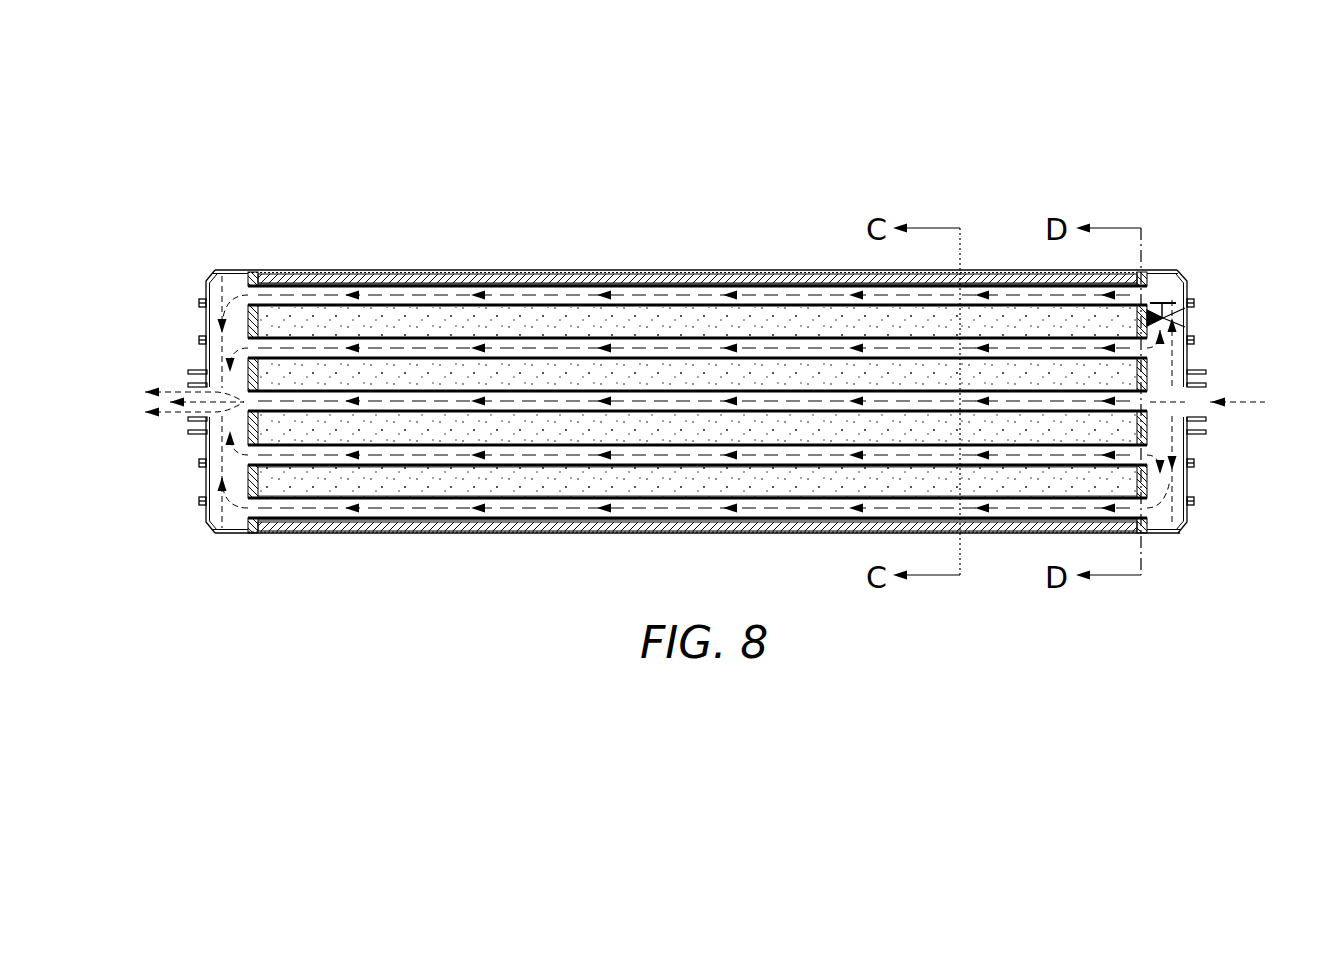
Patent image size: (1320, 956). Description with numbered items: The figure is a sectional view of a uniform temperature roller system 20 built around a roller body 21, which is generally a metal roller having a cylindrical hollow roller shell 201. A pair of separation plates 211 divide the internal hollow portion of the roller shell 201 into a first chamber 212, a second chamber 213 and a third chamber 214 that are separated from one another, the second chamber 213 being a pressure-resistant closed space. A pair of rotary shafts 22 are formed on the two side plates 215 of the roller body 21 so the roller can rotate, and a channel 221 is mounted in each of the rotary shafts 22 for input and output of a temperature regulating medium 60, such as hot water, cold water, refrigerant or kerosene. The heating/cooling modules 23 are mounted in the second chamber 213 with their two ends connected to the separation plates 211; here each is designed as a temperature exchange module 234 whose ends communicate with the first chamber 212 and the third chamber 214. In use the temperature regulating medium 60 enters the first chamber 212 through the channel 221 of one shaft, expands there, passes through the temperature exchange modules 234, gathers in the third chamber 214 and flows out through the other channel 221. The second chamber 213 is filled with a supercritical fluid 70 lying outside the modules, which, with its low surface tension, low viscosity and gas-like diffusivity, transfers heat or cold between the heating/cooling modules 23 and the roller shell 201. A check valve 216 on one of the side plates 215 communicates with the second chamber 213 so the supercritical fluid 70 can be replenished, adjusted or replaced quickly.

The uniform temperature roller system 20 is at (1302, 106).
The roller body 21 is at (1190, 181).
The roller shell 201 is at (470, 534).
The separation plates 211 is at (248, 490).
The first chamber 212 is at (231, 290).
The second chamber 213 is at (568, 318).
The third chamber 214 is at (1164, 286).
The side plates 215 is at (206, 313).
The check valve 216 is at (1188, 296).
The rotary shafts 22 is at (192, 423).
The channel 221 is at (202, 397).
The heating/cooling modules 23 is at (697, 528).
The temperature exchange module 234 is at (800, 472).
The temperature regulating medium 60 is at (385, 508).
The supercritical fluid 70 is at (568, 492).